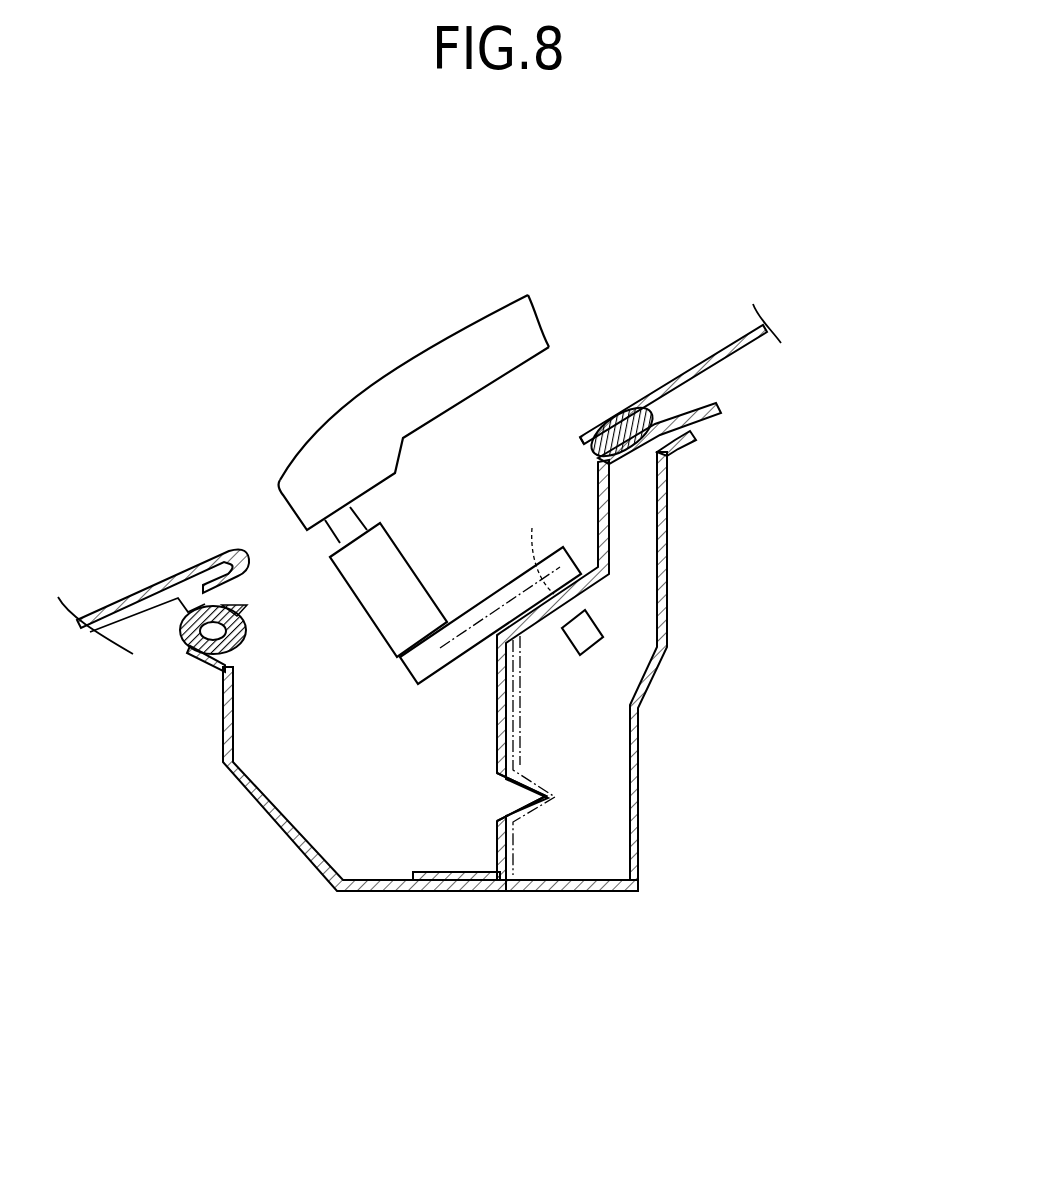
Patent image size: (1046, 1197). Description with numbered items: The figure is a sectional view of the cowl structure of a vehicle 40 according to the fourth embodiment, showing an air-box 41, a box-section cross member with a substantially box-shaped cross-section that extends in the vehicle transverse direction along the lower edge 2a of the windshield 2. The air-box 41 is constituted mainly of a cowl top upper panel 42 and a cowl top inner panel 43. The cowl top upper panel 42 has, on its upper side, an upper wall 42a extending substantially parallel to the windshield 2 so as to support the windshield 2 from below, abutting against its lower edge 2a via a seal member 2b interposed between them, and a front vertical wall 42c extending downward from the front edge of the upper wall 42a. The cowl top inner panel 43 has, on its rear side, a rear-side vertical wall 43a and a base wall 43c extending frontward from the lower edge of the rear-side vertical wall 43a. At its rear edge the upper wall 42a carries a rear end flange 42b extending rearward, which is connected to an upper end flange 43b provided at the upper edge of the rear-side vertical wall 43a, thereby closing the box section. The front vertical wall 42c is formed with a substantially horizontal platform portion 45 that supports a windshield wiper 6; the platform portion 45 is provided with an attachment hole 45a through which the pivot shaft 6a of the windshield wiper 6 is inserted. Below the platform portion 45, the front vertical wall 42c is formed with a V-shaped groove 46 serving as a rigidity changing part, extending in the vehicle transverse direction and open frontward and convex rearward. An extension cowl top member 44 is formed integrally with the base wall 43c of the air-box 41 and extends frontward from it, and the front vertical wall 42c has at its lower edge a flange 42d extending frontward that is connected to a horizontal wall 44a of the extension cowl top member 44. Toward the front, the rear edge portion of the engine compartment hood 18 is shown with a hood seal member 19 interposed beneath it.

The windshield 2 is at (723, 330).
The lower edge of windshield 2a is at (578, 438).
The seal member 2b is at (617, 400).
The windshield wiper 6 is at (391, 355).
The pivot shaft 6a is at (581, 658).
The engine compartment hood 18 is at (133, 584).
The hood seal member 19 is at (257, 642).
The vehicle 40 is at (308, 843).
The air-box 41 is at (607, 692).
The cowl top upper panel 42 is at (598, 628).
The upper wall 42a is at (613, 463).
The rear end flange 42b is at (710, 406).
The front vertical wall 42c is at (598, 487).
The flange 42d is at (438, 871).
The cowl top inner panel 43 is at (667, 717).
The rear-side vertical wall 43a is at (640, 742).
The upper end flange 43b is at (705, 433).
The base wall 43c is at (567, 892).
The extension cowl top member 44 is at (417, 950).
The horizontal wall 44a is at (451, 893).
The platform portion 45 is at (498, 589).
The attachment hole 45a is at (536, 548).
The V-shaped groove 46 is at (486, 796).